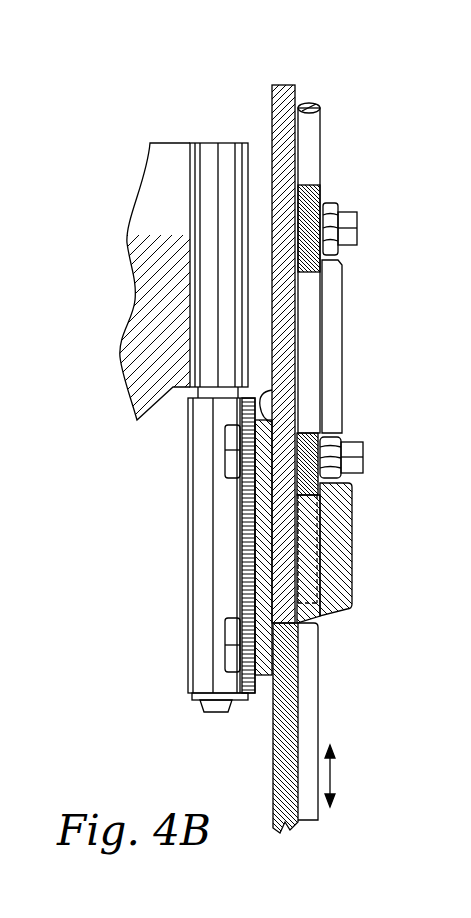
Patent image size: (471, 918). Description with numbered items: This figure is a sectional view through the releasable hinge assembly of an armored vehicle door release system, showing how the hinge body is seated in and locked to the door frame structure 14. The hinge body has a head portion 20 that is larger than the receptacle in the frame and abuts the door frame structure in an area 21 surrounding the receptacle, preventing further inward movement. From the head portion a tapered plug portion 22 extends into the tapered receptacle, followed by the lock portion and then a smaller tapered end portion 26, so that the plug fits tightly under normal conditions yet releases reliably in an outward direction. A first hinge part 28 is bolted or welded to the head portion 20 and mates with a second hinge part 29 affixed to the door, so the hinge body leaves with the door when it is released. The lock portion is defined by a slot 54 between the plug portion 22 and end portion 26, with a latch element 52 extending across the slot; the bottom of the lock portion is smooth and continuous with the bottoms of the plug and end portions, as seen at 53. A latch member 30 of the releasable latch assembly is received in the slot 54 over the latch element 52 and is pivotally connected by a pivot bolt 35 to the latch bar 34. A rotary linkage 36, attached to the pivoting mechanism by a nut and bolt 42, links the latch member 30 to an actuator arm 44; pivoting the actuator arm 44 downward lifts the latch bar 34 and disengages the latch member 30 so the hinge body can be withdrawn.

The door frame structure 14 is at (278, 84).
The head portion 20 is at (240, 425).
The area surrounding the receptacle 21 is at (263, 400).
The plug portion 22 is at (240, 497).
The end portion 26 is at (355, 546).
The first hinge part 28 is at (242, 545).
The second hinge part 29 is at (153, 142).
The latch member 30 is at (306, 432).
The latch bar 34 is at (308, 699).
The pivot bolt 35 is at (358, 452).
The rotary linkage 36 is at (333, 301).
The nut and bolt 42 is at (357, 210).
The actuator arm 44 is at (307, 138).
The latch element 52 is at (242, 522).
The smooth bottom of the lock portion 53 is at (313, 628).
The slot 54 is at (350, 524).